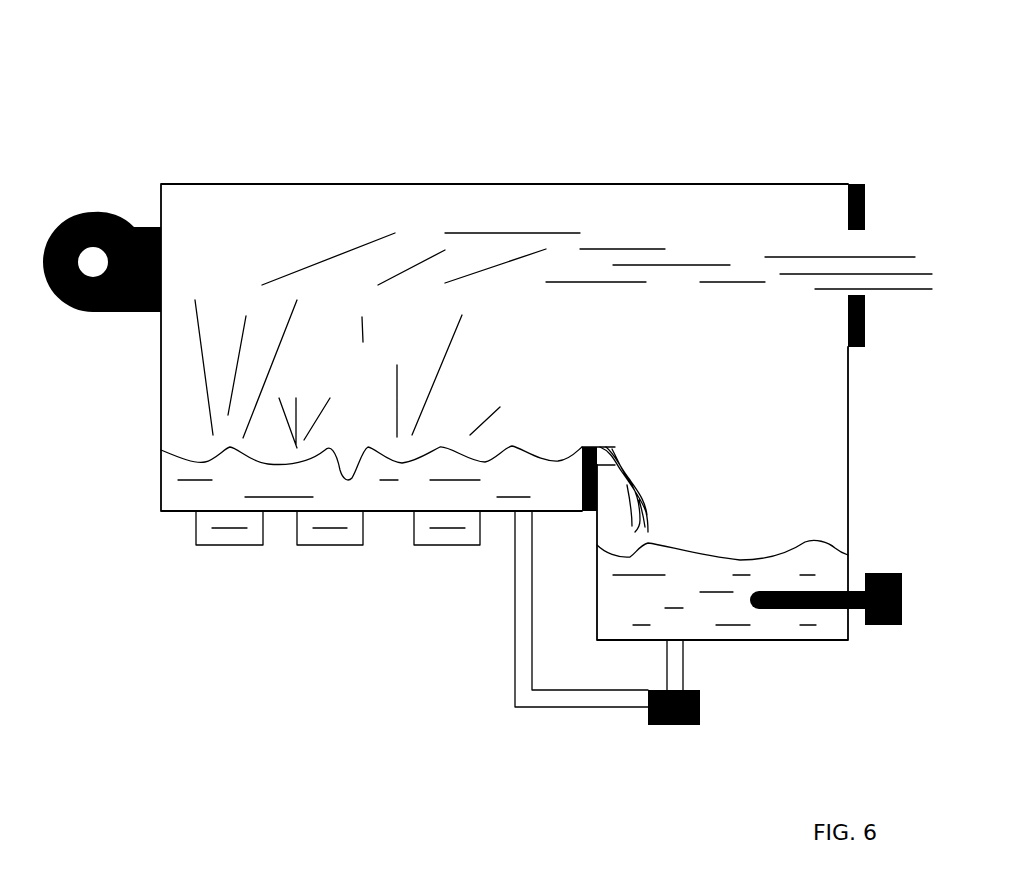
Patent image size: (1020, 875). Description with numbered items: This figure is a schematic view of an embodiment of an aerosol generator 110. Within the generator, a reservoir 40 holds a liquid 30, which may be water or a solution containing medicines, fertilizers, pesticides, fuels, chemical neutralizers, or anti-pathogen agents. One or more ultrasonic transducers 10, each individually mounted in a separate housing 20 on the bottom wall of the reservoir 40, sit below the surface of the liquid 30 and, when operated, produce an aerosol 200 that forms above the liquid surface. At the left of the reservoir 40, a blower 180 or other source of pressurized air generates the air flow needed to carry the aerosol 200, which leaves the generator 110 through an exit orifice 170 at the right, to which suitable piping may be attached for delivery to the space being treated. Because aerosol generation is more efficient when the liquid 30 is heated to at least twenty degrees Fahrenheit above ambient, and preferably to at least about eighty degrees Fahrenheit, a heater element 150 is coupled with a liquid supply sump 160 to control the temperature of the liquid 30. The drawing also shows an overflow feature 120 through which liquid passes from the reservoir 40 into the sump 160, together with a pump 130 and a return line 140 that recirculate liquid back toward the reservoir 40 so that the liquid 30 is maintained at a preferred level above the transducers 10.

The aerosol generator 110 is at (780, 108).
The blower 180 is at (112, 215).
The aerosol 200 is at (379, 437).
The reservoir 40 is at (463, 438).
The liquid 30 is at (197, 497).
The ultrasonic transducer 10 is at (247, 528).
The housing 20 is at (363, 545).
The overflow weir 120 is at (613, 429).
The liquid supply sump 160 is at (700, 575).
The heater element 150 is at (885, 640).
The return pipe 140 is at (515, 642).
The pump 130 is at (698, 725).
The exit orifice 170 is at (863, 240).